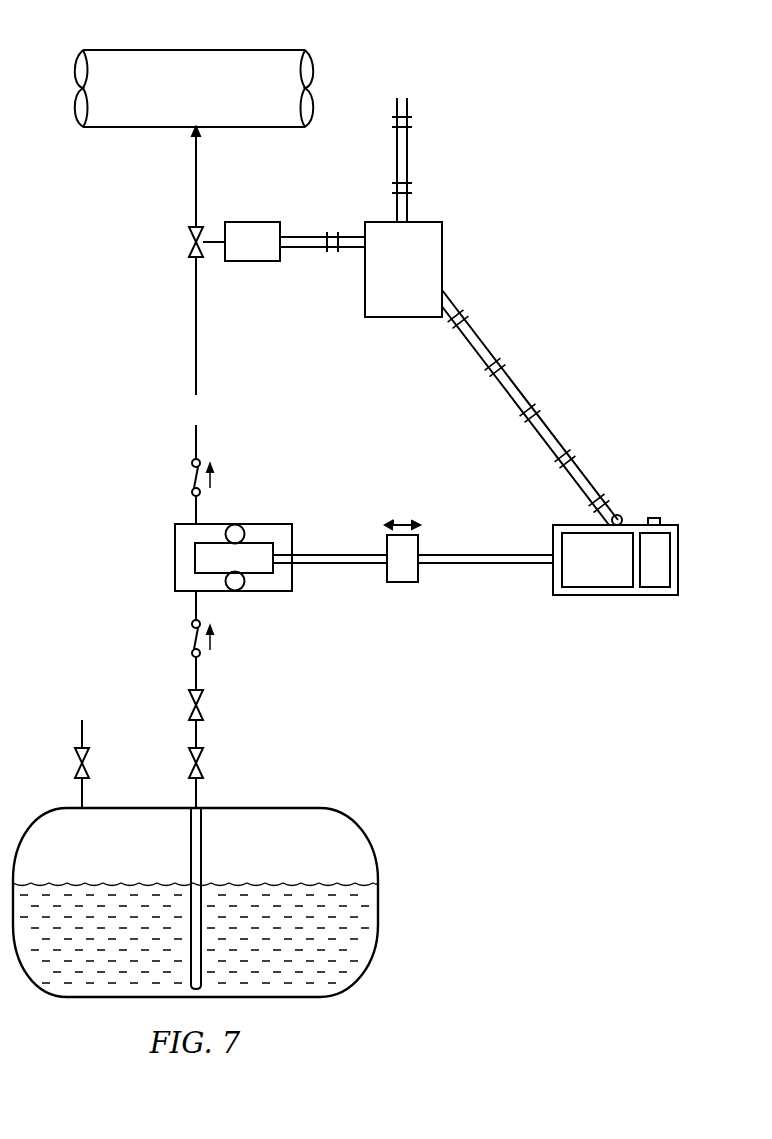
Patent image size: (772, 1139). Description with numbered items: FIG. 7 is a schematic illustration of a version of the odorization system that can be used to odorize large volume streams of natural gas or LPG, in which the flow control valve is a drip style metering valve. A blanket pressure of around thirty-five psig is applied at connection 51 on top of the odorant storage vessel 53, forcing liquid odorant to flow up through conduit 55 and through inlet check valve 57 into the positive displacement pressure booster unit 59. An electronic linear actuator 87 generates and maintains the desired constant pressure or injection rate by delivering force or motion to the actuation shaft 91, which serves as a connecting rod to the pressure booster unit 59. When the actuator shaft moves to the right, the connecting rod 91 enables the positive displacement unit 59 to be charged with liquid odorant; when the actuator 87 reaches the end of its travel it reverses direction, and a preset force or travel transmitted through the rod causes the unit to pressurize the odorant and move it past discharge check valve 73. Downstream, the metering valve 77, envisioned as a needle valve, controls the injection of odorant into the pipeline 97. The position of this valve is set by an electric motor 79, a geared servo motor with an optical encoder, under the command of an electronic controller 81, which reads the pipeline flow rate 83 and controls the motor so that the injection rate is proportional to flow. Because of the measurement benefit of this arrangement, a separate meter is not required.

The connection 51 is at (75, 758).
The odorant storage vessel 53 is at (283, 808).
The conduit 55 is at (190, 855).
The inlet check valve 57 is at (190, 638).
The positive displacement pressure booster unit 59 is at (175, 548).
The discharge check valve 73 is at (190, 476).
The flow control valve 77 is at (188, 242).
The electric motor 79 is at (250, 222).
The electronic controller 81 is at (444, 262).
The pipeline flow rate 83 is at (409, 147).
The electronic linear actuator 87 is at (622, 597).
The actuation shaft 91 is at (330, 568).
The pipeline 97 is at (164, 50).